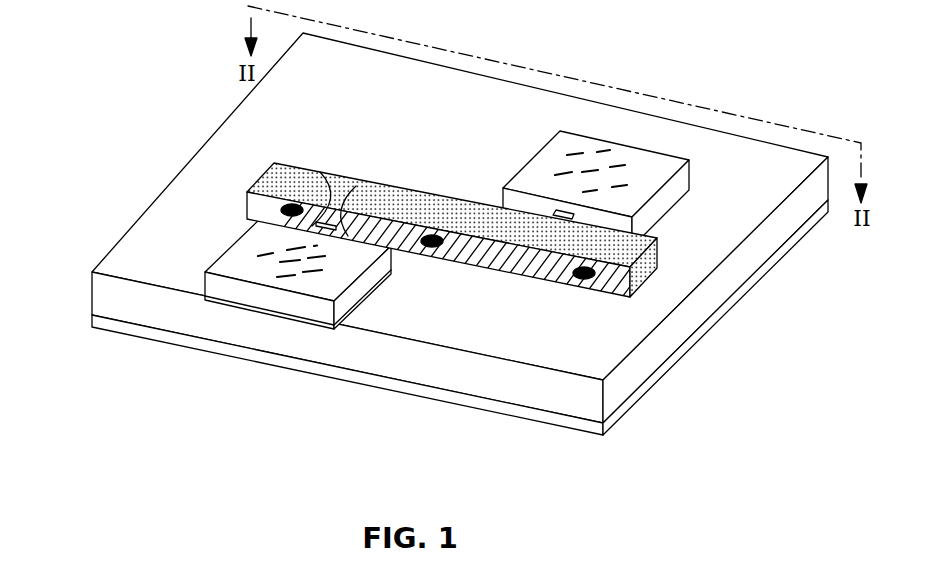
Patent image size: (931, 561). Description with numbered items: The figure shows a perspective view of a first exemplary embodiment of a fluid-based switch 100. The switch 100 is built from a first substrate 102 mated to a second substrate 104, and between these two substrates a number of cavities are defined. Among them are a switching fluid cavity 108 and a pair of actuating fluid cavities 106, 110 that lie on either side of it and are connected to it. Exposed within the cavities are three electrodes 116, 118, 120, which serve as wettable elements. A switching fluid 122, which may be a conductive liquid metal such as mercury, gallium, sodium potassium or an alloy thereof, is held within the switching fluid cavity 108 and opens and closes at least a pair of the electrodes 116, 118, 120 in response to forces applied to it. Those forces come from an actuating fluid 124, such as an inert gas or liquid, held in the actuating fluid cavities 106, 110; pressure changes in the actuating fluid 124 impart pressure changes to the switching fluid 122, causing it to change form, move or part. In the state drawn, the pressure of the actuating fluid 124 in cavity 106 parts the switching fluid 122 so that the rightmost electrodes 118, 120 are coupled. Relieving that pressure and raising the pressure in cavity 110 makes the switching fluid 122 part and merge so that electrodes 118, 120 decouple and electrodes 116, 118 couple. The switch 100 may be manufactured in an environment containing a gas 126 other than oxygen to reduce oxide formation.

The switch 100 is at (706, 70).
The first substrate 102 is at (138, 217).
The second substrate 104 is at (570, 432).
The actuating fluid cavity 106 is at (203, 287).
The switching fluid cavity 108 is at (646, 287).
The actuating fluid cavity 110 is at (683, 198).
The electrode 116 is at (293, 203).
The electrode 118 is at (428, 252).
The electrode 120 is at (583, 279).
The switching fluid 122 is at (280, 205).
The actuating fluid 124 is at (265, 248).
The gas 126 is at (307, 175).